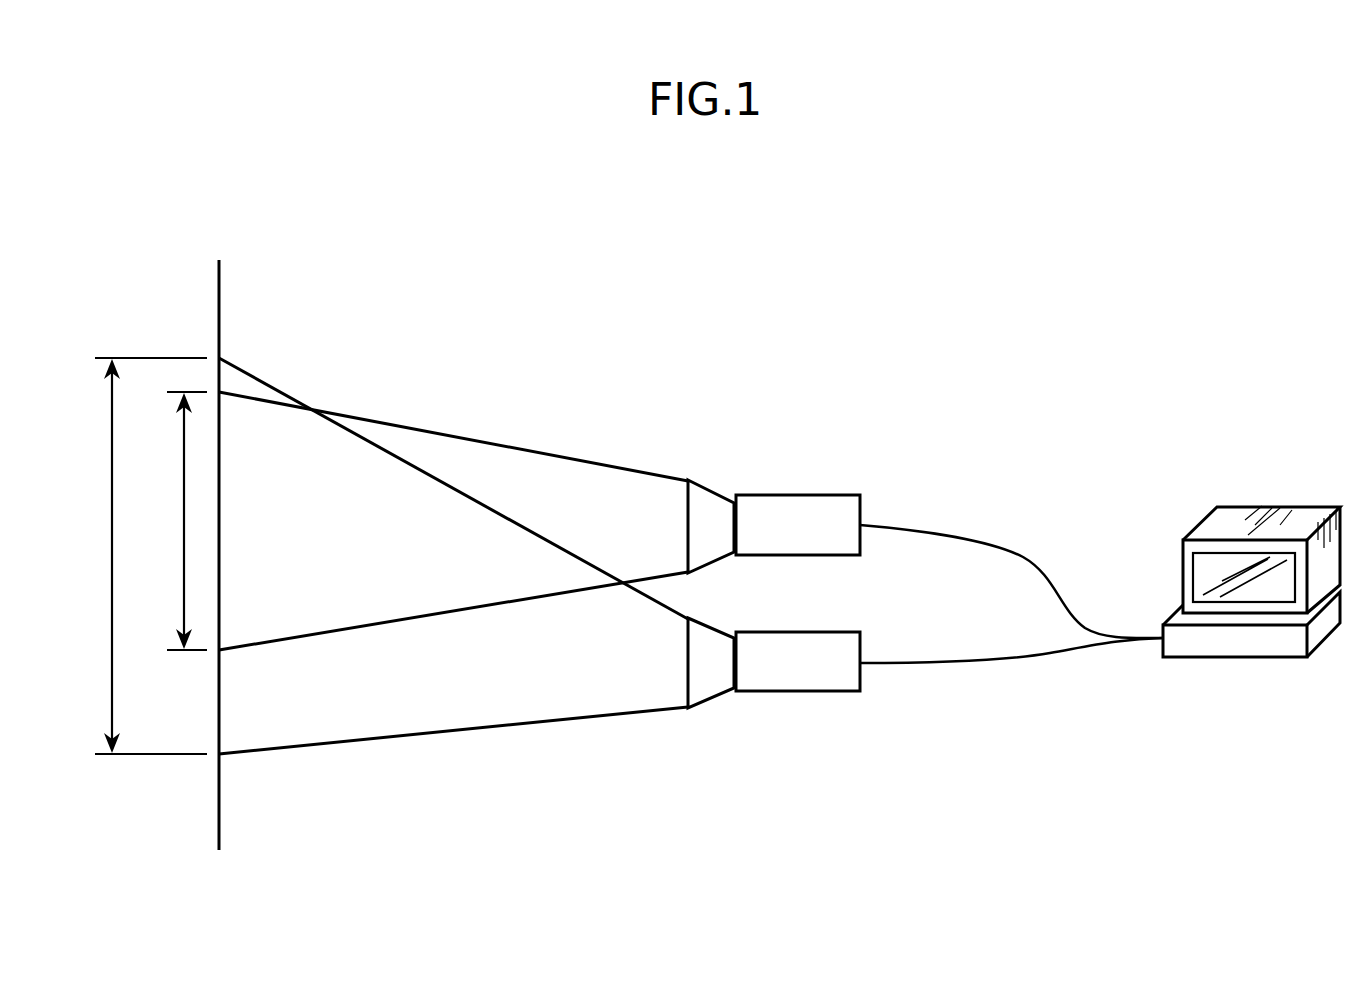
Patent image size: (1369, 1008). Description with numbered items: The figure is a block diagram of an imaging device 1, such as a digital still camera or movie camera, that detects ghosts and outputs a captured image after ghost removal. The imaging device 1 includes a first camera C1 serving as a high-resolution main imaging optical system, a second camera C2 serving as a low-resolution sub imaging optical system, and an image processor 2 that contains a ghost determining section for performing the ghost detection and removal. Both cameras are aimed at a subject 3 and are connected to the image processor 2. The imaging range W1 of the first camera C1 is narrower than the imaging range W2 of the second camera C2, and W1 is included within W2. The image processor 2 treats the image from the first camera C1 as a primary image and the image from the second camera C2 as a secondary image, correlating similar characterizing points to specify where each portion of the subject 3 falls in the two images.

The imaging device 1 is at (627, 307).
The image processor 2 is at (1275, 503).
The subject 3 is at (219, 300).
The first camera C1 is at (713, 491).
The second camera C2 is at (713, 697).
The imaging range of the first camera W1 is at (169, 521).
The imaging range of the second camera W2 is at (136, 556).